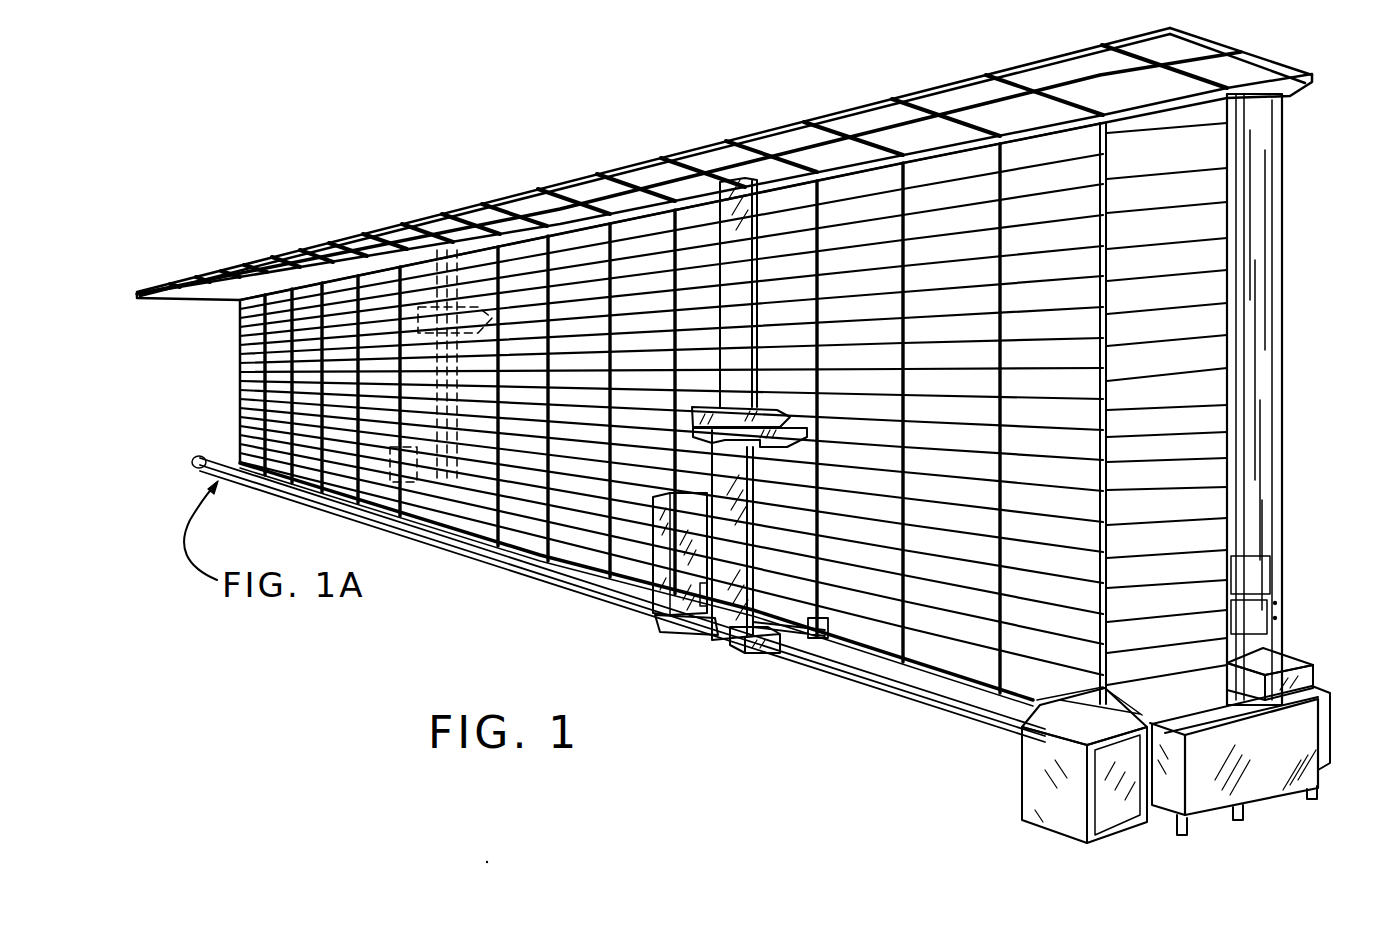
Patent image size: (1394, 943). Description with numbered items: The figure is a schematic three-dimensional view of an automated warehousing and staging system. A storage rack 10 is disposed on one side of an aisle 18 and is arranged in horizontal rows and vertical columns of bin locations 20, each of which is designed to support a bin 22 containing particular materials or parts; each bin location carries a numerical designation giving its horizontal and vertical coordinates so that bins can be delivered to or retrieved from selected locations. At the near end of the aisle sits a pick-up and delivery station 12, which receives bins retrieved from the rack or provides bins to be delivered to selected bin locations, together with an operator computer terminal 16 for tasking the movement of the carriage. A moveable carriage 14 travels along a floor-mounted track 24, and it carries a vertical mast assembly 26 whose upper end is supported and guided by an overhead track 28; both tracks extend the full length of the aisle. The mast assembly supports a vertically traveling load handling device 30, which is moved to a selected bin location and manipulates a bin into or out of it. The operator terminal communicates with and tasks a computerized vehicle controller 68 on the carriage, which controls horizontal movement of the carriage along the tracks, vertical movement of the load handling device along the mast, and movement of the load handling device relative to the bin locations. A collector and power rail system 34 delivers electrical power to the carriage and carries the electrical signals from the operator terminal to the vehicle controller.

The storage rack 10 is at (522, 165).
The pick-up and delivery station 12 is at (1275, 805).
The moveable carriage 14 is at (675, 630).
The operator computer terminal 16 is at (1290, 643).
The aisle 18 is at (870, 662).
The bin location 20 is at (1210, 183).
The bin 22 is at (760, 403).
The floor-mounted track 24 is at (497, 558).
The vertical mast assembly 26 is at (727, 643).
The overhead track 28 is at (1253, 55).
The load handling device 30 is at (692, 432).
The collector and power rail system 34 is at (833, 647).
The computerized vehicle controller 68 is at (652, 550).